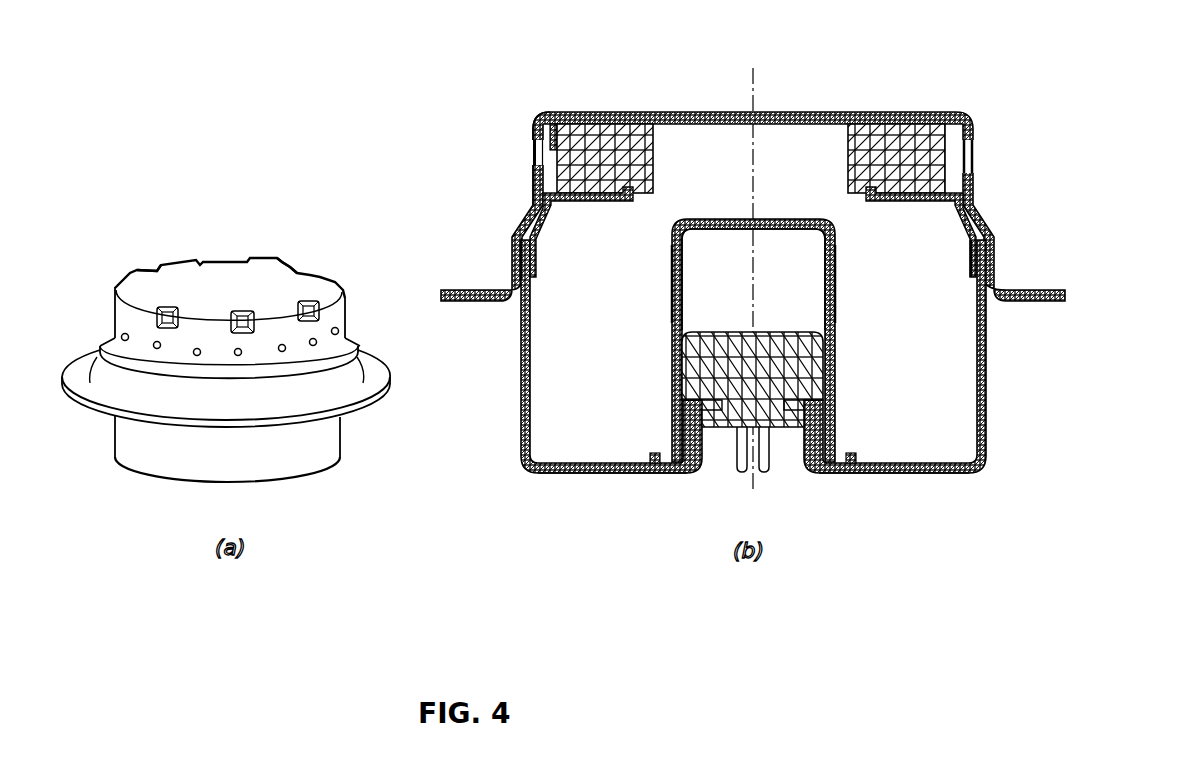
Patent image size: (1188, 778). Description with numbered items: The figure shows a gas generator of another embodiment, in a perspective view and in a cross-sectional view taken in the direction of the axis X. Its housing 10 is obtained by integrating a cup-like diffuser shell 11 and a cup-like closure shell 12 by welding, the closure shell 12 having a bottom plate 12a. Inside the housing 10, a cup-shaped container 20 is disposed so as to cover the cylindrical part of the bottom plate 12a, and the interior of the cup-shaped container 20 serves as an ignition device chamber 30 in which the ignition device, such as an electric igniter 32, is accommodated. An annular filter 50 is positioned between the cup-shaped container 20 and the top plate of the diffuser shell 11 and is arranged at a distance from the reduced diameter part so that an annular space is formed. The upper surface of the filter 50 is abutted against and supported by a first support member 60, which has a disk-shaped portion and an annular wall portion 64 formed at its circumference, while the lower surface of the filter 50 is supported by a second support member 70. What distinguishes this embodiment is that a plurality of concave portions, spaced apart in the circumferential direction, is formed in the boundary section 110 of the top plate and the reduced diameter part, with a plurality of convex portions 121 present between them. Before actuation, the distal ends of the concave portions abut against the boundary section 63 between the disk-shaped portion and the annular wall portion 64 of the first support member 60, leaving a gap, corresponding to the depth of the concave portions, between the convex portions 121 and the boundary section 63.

The housing 10 is at (806, 292).
The diffuser shell 11 is at (994, 258).
The closure shell 12 is at (986, 348).
The bottom plate 12a is at (895, 474).
The cup-shaped container 20 is at (766, 219).
The ignition device chamber 30 is at (798, 279).
The electric igniter 32 is at (767, 360).
The annular filter 50 is at (848, 172).
The first support member 60 is at (705, 126).
The boundary section 63 is at (552, 128).
The annular wall portion 64 is at (534, 137).
The second support member 70 is at (556, 219).
The boundary section 110 is at (118, 280).
The convex portions 121 is at (287, 258).
The axis X is at (753, 267).